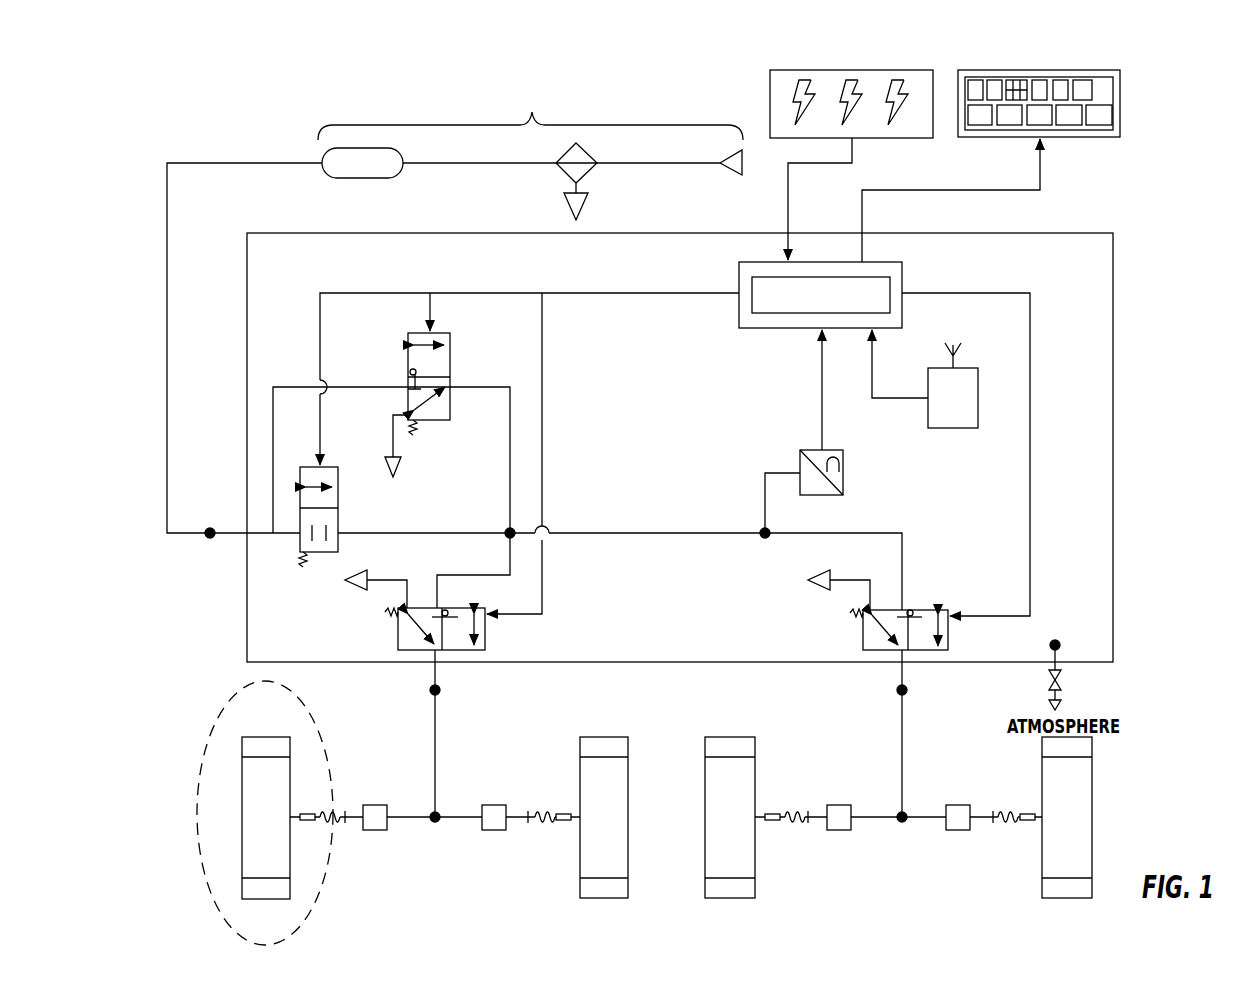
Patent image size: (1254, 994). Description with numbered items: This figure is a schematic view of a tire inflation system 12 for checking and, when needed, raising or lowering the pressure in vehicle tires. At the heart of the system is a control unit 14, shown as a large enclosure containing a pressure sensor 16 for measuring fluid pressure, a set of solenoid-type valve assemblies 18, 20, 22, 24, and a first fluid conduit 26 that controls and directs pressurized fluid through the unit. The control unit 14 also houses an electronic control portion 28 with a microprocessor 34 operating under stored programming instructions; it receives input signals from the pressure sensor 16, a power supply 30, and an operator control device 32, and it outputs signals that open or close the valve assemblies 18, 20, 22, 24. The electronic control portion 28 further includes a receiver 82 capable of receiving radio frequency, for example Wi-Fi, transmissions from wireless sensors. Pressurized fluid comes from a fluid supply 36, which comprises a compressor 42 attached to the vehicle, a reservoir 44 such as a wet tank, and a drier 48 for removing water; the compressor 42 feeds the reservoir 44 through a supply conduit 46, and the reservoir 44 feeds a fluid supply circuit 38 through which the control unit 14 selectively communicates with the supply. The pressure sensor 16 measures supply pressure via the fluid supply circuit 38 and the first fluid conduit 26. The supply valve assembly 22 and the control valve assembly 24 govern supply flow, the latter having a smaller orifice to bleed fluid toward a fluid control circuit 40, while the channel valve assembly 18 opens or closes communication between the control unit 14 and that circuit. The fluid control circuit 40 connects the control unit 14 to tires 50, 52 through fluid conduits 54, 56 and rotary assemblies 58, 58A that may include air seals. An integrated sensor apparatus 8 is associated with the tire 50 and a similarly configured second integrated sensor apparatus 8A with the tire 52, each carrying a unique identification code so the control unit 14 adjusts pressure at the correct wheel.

The integrated sensor apparatus 8 is at (313, 812).
The second integrated sensor apparatus 8A is at (545, 812).
The tire inflation system 12 is at (1136, 188).
The control unit 14 is at (1097, 296).
The pressure sensor 16 is at (800, 463).
The channel valve assembly 18 is at (398, 625).
The valve assembly 20 is at (863, 630).
The supply valve assembly 22 is at (338, 472).
The control valve assembly 24 is at (432, 420).
The first fluid conduit 26 is at (660, 533).
The electronic control portion 28 is at (739, 283).
The power supply 30 is at (860, 70).
The operator control device 32 is at (1010, 70).
The microprocessor 34 is at (904, 288).
The fluid supply 36 is at (530, 112).
The fluid supply circuit 38 is at (167, 400).
The fluid control circuit 40 is at (432, 725).
The compressor 42 is at (719, 166).
The reservoir 44 is at (355, 179).
The supply conduit 46 is at (487, 164).
The drier 48 is at (589, 173).
The tire 50 is at (276, 735).
The tire 52 is at (581, 737).
The fluid conduit 54 is at (432, 657).
The fluid conduit 56 is at (436, 765).
The rotary assembly 58 is at (372, 832).
The rotary assembly 58A is at (492, 832).
The receiver 82 is at (952, 428).